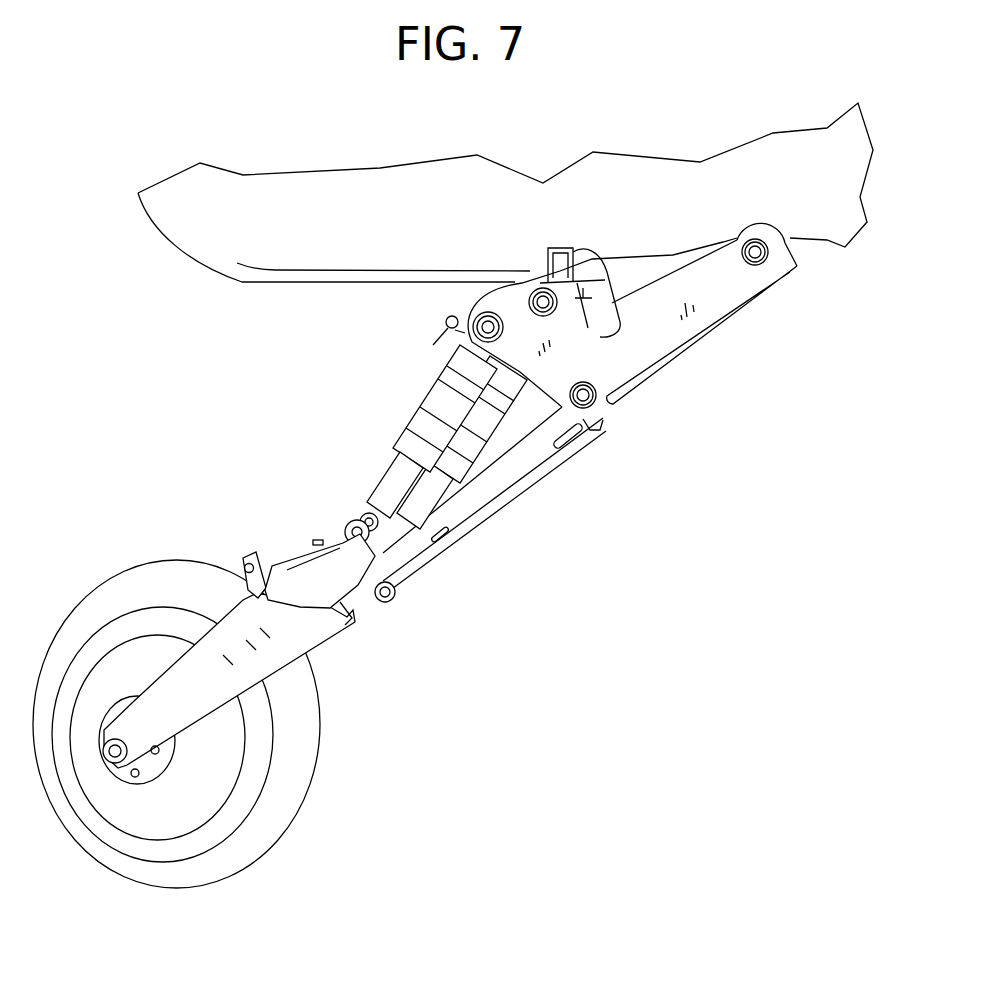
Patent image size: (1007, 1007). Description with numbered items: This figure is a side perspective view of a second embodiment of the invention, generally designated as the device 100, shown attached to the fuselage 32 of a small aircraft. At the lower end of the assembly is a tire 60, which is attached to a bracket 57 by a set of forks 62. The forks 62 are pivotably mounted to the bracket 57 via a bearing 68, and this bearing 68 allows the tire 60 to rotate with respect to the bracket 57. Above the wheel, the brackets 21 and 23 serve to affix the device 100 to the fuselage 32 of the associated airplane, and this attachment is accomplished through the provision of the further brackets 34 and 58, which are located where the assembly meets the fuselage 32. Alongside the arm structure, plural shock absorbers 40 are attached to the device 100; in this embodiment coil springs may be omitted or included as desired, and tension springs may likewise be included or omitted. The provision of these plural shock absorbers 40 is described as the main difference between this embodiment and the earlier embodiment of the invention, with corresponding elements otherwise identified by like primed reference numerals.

The fuselage 32 is at (218, 240).
The bracket 34 is at (590, 262).
The bracket 58 is at (792, 255).
The bracket 21 is at (703, 345).
The bracket 23 is at (632, 365).
The shock absorbers 40 is at (438, 398).
The bracket 57 is at (287, 573).
The tire 60 is at (163, 575).
The bearing 68 is at (350, 608).
The forks 62 is at (215, 697).
The device 100 is at (458, 577).